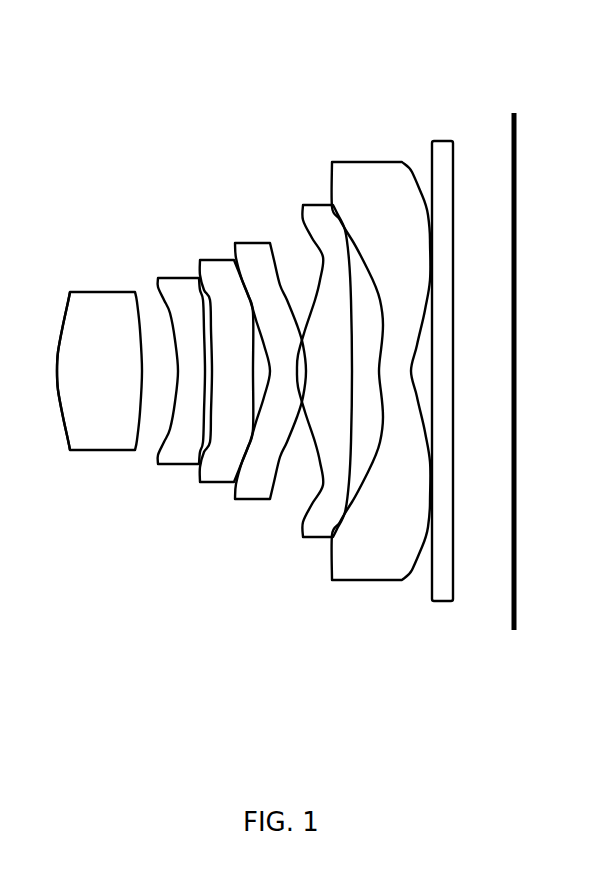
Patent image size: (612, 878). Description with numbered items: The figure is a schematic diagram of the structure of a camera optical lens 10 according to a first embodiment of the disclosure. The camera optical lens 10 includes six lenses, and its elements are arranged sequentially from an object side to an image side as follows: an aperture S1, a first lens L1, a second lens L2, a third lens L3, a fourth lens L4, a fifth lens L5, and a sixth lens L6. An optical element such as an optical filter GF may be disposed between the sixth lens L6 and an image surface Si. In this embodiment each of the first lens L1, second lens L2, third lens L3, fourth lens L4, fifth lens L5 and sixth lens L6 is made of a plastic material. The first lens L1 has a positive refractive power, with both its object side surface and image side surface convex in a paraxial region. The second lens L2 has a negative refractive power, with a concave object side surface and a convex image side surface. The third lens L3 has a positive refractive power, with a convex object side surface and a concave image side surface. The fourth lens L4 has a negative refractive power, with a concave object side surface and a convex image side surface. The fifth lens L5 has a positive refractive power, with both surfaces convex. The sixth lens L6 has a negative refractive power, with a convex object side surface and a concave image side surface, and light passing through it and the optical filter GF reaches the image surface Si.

The camera optical lens 10 is at (308, 40).
The aperture S1 is at (56, 365).
The first lens L1 is at (99, 363).
The second lens L2 is at (181, 361).
The third lens L3 is at (227, 361).
The fourth lens L4 is at (270, 361).
The fifth lens L5 is at (324, 360).
The sixth lens L6 is at (381, 362).
The optical filter GF is at (441, 359).
The image surface Si is at (514, 361).